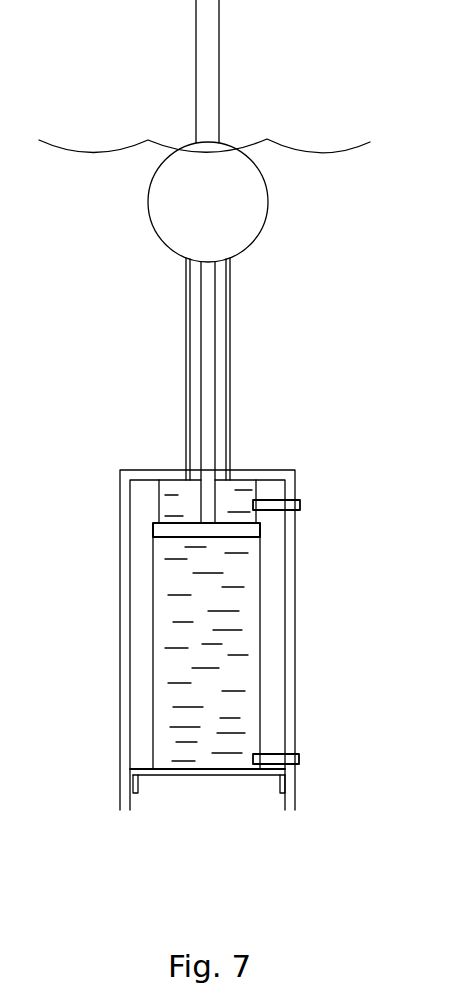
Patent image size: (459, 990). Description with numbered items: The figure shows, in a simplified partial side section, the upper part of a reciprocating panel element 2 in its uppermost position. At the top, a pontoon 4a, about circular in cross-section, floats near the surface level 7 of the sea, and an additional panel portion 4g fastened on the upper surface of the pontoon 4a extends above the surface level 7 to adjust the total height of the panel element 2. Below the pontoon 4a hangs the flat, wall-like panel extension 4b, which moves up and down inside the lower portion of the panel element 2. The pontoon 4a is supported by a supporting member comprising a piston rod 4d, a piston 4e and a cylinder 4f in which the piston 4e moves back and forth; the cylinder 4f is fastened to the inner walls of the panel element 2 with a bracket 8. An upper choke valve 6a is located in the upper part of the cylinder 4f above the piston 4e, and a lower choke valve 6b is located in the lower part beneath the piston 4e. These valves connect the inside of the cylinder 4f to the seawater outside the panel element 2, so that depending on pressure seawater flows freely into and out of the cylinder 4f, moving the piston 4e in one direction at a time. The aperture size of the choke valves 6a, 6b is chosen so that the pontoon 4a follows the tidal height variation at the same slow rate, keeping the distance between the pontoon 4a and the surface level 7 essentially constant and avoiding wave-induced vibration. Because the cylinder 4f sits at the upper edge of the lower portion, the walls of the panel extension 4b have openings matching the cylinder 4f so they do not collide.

The panel element 2 is at (288, 592).
The pontoon 4a is at (158, 222).
The panel extension 4b is at (228, 357).
The piston rod 4d is at (205, 347).
The piston 4e is at (158, 530).
The cylinder 4f is at (160, 665).
The additional panel portion 4g is at (203, 60).
The upper choke valve 6a is at (302, 505).
The lower choke valve 6b is at (302, 758).
The surface level 7 is at (332, 150).
The bracket 8 is at (130, 773).